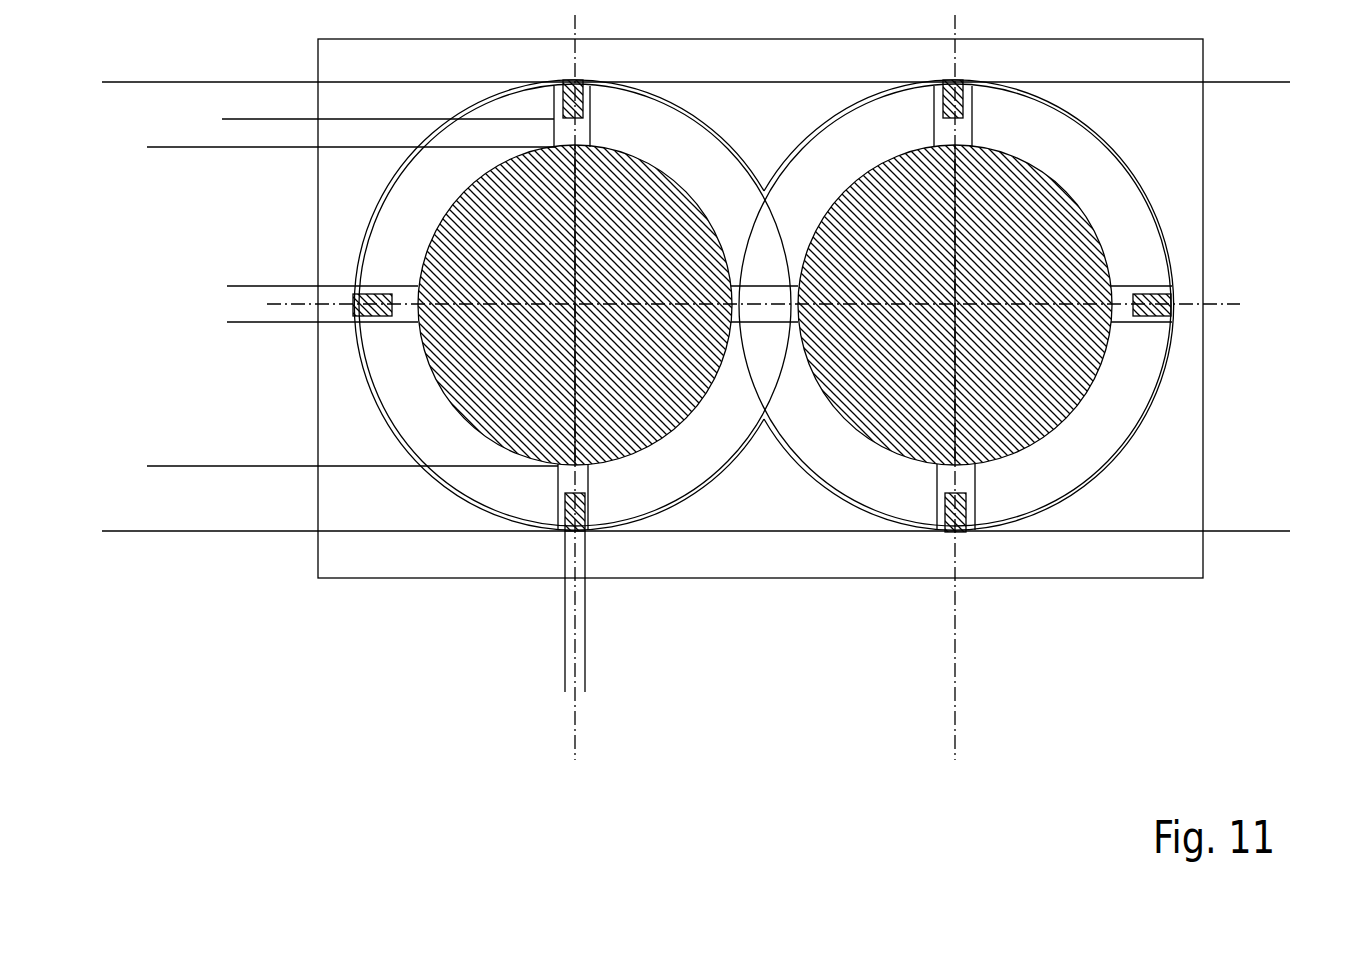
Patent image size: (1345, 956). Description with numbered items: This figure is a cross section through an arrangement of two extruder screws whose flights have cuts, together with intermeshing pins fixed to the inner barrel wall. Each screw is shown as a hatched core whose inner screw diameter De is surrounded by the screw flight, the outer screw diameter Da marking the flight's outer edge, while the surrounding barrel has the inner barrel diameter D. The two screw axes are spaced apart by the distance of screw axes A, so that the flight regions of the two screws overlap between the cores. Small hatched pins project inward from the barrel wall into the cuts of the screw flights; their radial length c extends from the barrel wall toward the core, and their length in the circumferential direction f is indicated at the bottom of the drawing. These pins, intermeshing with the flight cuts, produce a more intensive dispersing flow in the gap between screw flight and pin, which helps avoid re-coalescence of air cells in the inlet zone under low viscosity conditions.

The inner barrel diameter D is at (120, 82).
The inner screw diameter De is at (173, 147).
The radial length of intermeshing pins c is at (232, 346).
The outer screw diameter Da is at (1278, 82).
The length of the intermeshing pins in the circumferential direction f is at (528, 668).
The distance of screw axes A is at (955, 747).